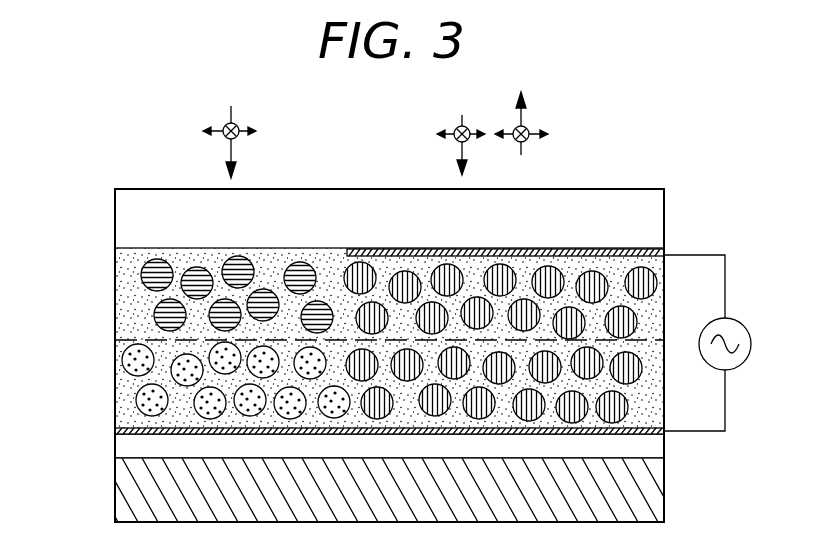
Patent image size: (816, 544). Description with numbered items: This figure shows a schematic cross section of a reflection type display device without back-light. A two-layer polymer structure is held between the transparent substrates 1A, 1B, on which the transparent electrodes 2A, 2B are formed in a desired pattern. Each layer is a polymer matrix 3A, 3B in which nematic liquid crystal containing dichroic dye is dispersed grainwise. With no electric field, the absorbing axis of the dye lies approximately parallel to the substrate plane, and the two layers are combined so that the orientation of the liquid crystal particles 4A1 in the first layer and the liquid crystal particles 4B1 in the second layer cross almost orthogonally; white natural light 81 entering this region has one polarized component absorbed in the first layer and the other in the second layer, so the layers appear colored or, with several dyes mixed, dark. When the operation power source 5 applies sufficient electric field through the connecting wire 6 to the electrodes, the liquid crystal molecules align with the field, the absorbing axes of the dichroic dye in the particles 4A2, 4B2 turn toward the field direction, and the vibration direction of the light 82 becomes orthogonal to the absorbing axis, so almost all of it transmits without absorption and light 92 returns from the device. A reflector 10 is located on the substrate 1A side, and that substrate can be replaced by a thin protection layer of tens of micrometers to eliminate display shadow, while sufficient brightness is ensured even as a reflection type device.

The transparent substrate 1A is at (122, 443).
The transparent substrate 1B is at (132, 210).
The transparent electrode 2A is at (634, 434).
The transparent electrode 2B is at (629, 253).
The polymer matrix 3A is at (125, 395).
The polymer matrix 3B is at (128, 298).
The liquid crystal particles 4A1 is at (128, 358).
The liquid crystal particles 4A2 is at (622, 405).
The liquid crystal particles 4B1 is at (140, 267).
The liquid crystal particles 4B2 is at (655, 280).
The operation power source 5 is at (751, 333).
The connecting wire 6 is at (726, 263).
The reflector 10 is at (132, 485).
The white natural light 81 is at (218, 145).
The light 82 is at (445, 125).
The reflected light 92 is at (544, 117).